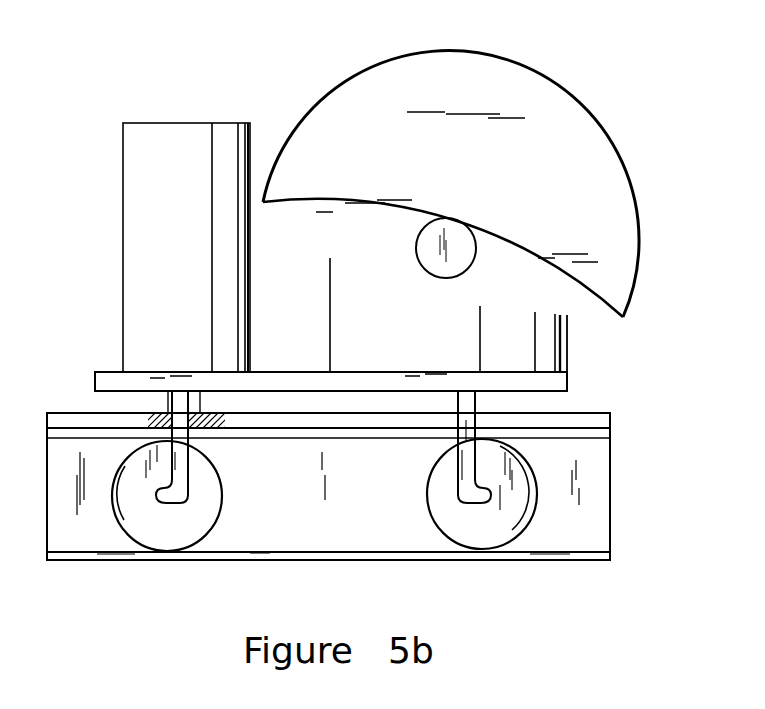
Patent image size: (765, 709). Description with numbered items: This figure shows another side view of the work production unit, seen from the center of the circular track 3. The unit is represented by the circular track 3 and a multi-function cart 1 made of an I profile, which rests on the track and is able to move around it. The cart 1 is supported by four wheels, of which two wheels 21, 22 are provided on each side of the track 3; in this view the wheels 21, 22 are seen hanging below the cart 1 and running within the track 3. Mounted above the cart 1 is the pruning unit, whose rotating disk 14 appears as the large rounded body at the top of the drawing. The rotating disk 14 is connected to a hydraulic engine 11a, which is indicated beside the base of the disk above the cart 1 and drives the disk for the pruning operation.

The multi-function cart 1 is at (108, 378).
The circular track 3 is at (590, 557).
The hydraulic engine 11a is at (518, 340).
The rotating disk 14 is at (513, 87).
The wheel 21 is at (495, 532).
The wheel 22 is at (158, 530).